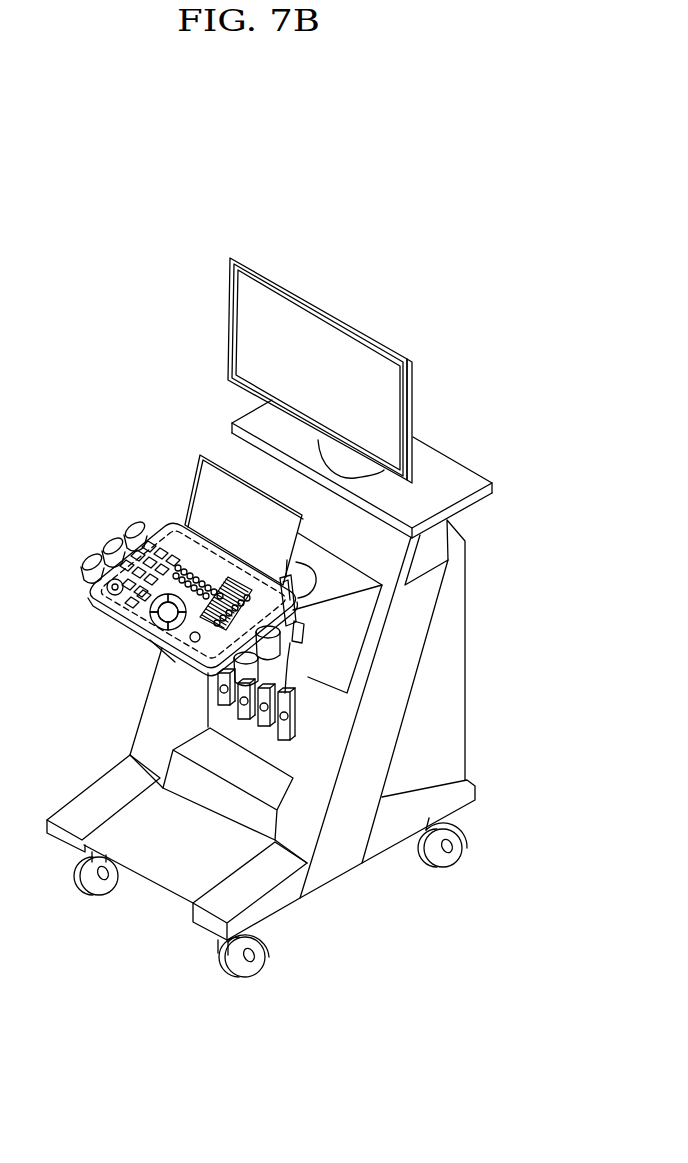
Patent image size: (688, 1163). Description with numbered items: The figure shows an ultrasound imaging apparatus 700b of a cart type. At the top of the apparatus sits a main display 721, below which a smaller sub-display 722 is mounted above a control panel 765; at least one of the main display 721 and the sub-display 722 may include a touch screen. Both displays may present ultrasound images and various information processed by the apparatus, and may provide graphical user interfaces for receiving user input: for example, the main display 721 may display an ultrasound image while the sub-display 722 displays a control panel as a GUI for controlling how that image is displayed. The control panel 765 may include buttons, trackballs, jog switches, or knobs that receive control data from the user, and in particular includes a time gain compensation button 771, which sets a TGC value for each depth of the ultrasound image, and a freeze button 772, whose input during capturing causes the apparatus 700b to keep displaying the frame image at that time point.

The ultrasound imaging apparatus 700b is at (387, 219).
The main display 721 is at (292, 296).
The sub-display 722 is at (198, 468).
The control panel 765 is at (160, 530).
The time gain compensation (TGC) button 771 is at (191, 641).
The freeze button 772 is at (162, 647).